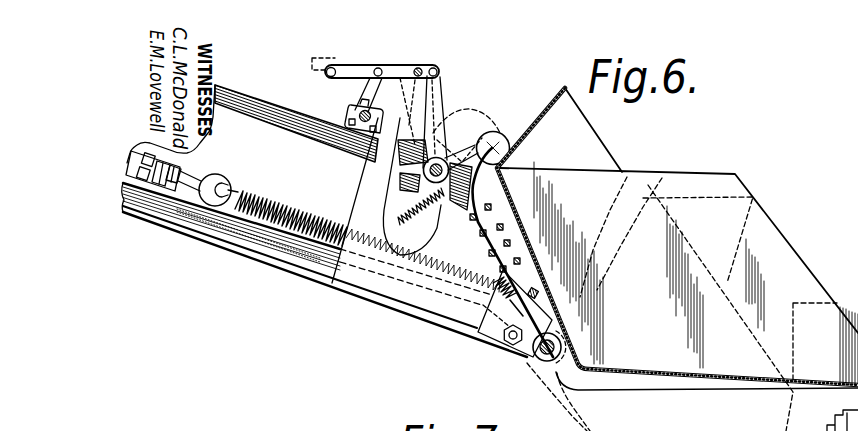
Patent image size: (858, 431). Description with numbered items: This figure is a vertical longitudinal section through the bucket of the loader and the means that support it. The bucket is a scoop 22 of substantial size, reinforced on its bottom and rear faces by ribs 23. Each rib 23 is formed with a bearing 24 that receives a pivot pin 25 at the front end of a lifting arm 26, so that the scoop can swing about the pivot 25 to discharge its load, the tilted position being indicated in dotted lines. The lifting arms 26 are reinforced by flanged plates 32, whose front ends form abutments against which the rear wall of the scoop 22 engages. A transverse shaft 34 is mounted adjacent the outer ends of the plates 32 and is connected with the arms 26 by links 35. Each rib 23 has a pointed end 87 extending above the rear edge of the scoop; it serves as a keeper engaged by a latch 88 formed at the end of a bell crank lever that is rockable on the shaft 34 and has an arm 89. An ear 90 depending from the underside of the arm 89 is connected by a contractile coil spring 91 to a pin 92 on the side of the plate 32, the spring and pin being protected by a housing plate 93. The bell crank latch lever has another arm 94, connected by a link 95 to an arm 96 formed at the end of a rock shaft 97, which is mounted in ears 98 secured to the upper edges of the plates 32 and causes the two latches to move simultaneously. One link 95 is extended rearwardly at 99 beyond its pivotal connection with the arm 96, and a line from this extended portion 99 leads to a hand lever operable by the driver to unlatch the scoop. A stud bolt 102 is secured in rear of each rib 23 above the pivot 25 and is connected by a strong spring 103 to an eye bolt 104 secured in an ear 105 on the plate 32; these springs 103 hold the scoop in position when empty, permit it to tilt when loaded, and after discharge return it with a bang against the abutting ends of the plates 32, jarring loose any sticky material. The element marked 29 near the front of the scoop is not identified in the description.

The scoop 22 is at (740, 163).
The ribs 23 is at (620, 383).
The bearing 24 is at (533, 353).
The pivot pin 25 is at (533, 350).
The lifting arm 26 is at (260, 247).
The hopper part 29 is at (847, 142).
The flanged plates 32 is at (235, 112).
The transverse shaft 34 is at (424, 172).
The links 35 is at (503, 302).
The pointed end 87 is at (500, 168).
The latch 88 is at (505, 135).
The arm 89 is at (457, 143).
The ear 90 is at (467, 180).
The contractile coil spring 91 is at (422, 206).
The pin 92 is at (382, 253).
The housing plate 93 is at (365, 198).
The arm 94 is at (438, 80).
The link 95 is at (400, 66).
The arm 96 is at (365, 91).
The rock shaft 97 is at (378, 119).
The ears 98 is at (345, 125).
The extended portion 99 is at (333, 68).
The stud bolt 102 is at (540, 293).
The spring 103 is at (290, 197).
The eye bolt 104 is at (182, 195).
The ear 105 is at (184, 166).